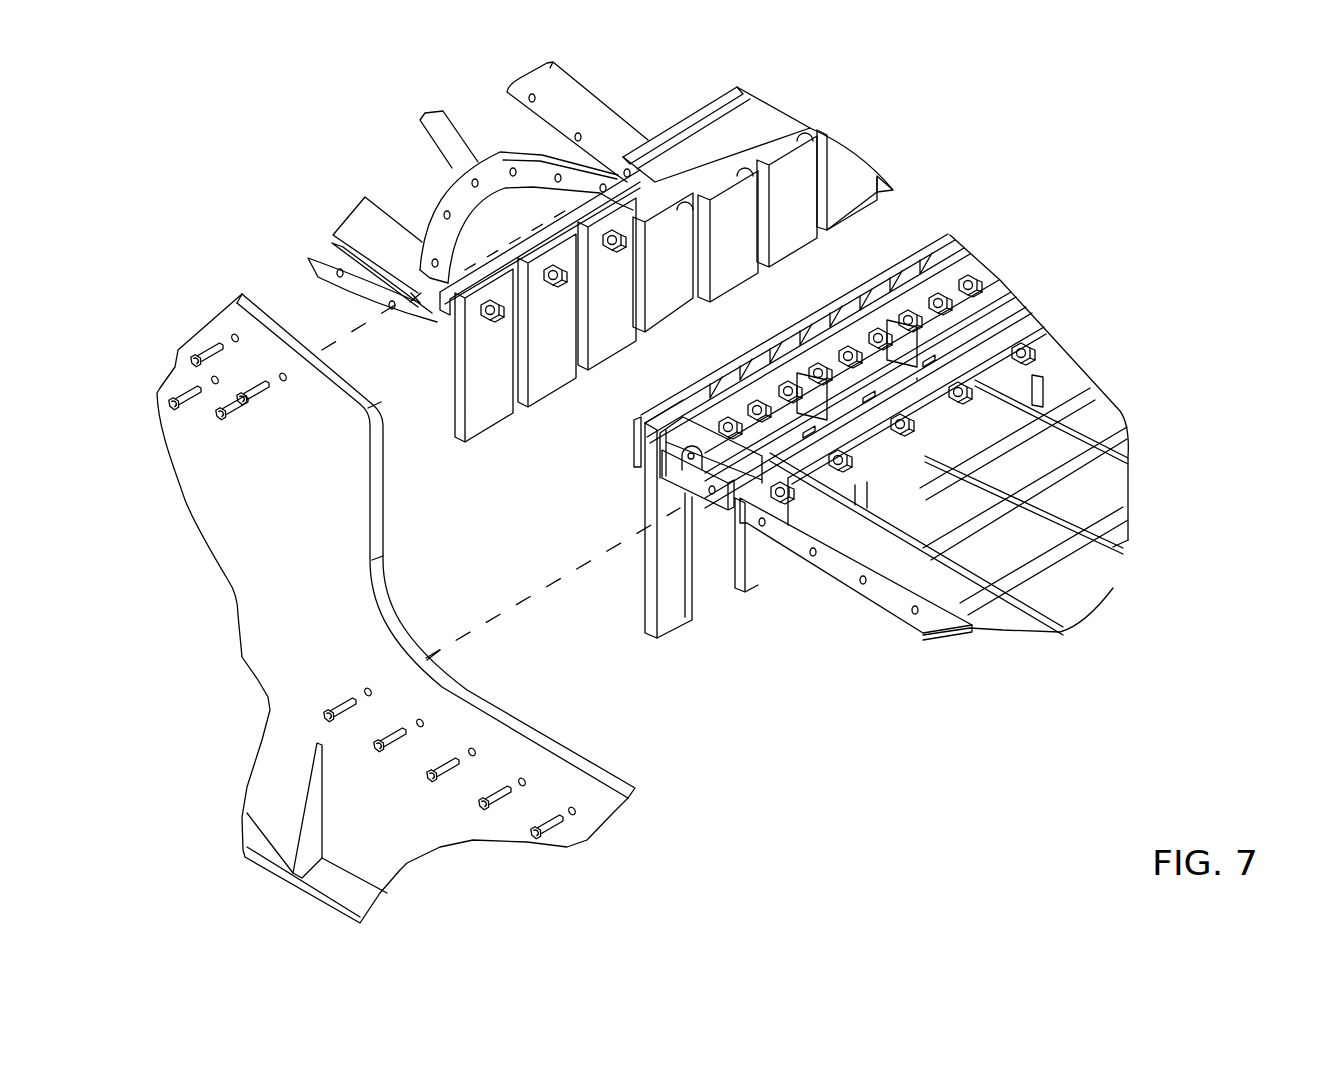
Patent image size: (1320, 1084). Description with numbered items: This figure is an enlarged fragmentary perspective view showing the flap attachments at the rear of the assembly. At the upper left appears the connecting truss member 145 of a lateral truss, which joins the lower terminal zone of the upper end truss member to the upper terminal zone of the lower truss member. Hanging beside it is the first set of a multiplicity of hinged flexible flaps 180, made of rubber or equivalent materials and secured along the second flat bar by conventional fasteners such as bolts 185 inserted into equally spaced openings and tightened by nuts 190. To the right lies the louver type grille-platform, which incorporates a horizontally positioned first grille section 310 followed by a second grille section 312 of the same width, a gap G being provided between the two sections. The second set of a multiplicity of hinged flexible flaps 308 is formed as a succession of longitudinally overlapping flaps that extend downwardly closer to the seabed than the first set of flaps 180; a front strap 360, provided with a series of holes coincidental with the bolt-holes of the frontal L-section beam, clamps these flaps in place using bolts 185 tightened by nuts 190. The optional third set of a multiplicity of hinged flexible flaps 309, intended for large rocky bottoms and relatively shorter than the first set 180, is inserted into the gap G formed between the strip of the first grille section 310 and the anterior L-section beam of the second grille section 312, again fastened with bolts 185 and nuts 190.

The connecting truss member 145 is at (493, 167).
The first set of hinged flexible flaps 180 is at (550, 362).
The front strap 360 is at (633, 452).
The second set of hinged flexible flaps 308 is at (720, 565).
The third set of hinged flexible flaps 309 is at (773, 567).
The first grille section 310 is at (958, 316).
The bolts 185 is at (942, 290).
The nuts 190 is at (903, 423).
The gap G is at (917, 378).
The second grille section 312 is at (1068, 487).